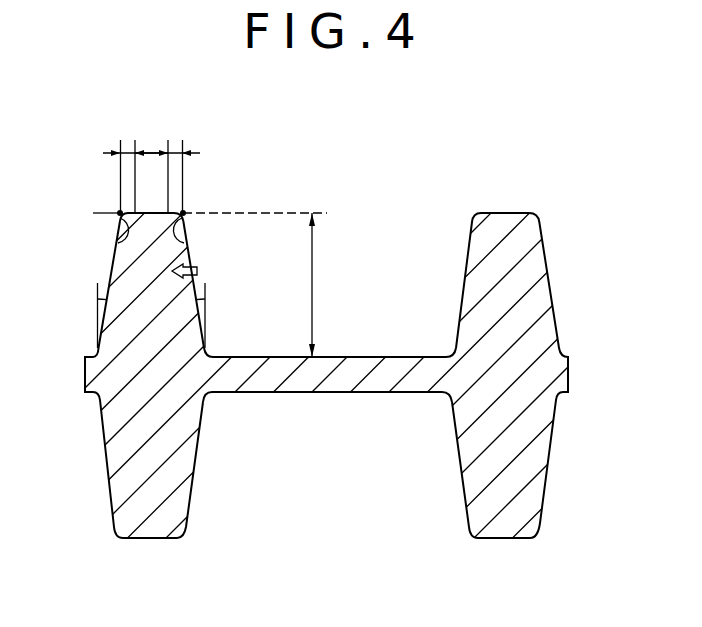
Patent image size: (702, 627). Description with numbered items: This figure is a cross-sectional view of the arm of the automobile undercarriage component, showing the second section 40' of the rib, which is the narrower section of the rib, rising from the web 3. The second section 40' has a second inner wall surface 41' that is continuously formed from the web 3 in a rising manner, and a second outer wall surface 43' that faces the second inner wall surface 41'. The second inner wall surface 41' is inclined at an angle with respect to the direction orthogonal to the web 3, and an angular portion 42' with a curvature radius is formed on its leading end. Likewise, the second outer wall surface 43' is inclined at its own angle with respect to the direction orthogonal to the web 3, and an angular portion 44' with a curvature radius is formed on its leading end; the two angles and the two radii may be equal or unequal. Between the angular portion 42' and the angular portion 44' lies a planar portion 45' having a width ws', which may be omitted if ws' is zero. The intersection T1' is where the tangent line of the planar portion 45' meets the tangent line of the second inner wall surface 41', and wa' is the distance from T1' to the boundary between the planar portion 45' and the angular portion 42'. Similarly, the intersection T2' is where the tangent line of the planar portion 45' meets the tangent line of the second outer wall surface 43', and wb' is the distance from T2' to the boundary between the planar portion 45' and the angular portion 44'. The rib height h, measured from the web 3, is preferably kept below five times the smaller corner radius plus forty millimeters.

The second section 40' is at (351, 327).
The second inner wall surface 41' is at (221, 284).
The angular portion 42' is at (209, 228).
The second outer wall surface 43' is at (79, 284).
The angular portion 44' is at (93, 228).
The planar portion 45' is at (151, 190).
The web 3 is at (261, 357).
The intersection T1' is at (253, 192).
The intersection T2' is at (93, 191).
The distance wa' is at (193, 160).
The distance wb' is at (146, 160).
The width ws' is at (154, 132).
The height h is at (321, 285).